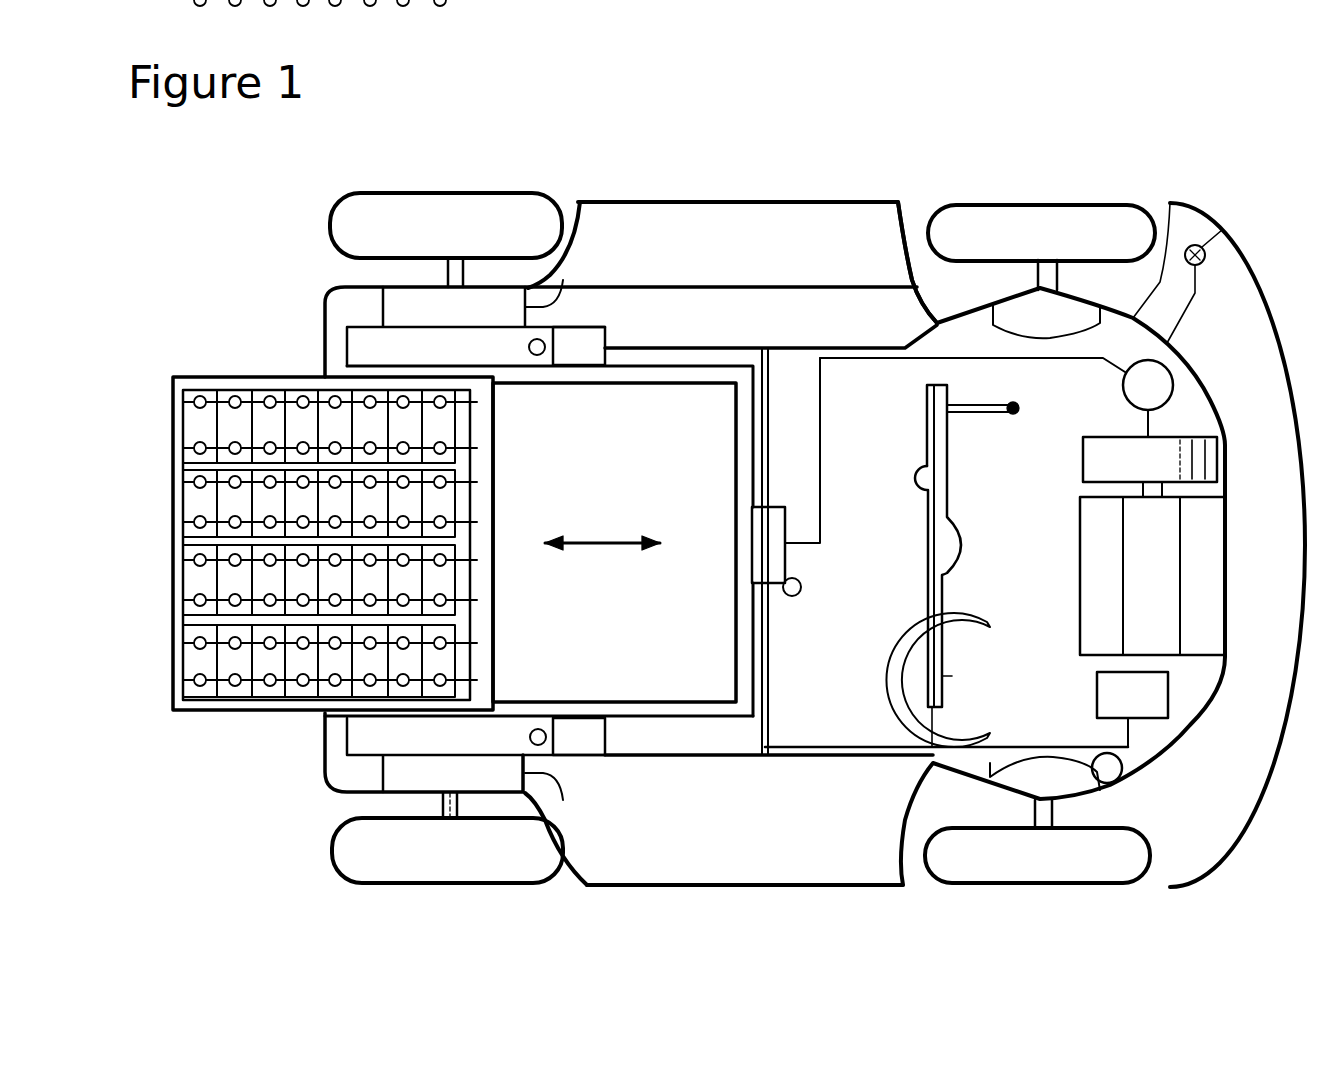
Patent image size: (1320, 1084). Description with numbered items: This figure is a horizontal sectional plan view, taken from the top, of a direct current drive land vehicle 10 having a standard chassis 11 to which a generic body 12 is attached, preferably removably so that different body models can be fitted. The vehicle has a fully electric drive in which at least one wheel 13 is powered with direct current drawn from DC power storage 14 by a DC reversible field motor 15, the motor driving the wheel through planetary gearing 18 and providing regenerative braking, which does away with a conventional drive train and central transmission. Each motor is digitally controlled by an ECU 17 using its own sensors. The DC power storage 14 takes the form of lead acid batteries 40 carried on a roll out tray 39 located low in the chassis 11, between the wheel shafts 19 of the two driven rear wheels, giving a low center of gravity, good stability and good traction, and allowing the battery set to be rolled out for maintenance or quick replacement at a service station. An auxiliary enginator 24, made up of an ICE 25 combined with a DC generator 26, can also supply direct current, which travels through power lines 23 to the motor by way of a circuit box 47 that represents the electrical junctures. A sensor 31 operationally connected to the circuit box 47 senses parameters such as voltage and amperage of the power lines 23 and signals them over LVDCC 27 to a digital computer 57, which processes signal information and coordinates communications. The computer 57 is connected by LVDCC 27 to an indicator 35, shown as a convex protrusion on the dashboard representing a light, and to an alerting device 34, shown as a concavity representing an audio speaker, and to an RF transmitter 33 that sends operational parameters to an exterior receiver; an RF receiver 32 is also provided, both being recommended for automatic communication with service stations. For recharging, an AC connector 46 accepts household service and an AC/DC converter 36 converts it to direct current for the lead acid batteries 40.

The DC drive land vehicle 10 is at (1225, 142).
The chassis 11 is at (922, 303).
The body 12 is at (757, 192).
The wheel 13 is at (375, 185).
The DC power storage 14 is at (213, 348).
The DC reversible field motor 15 is at (340, 348).
The ECU 17 is at (612, 333).
The planetary gearing 18 is at (563, 282).
The wheel shaft 19 is at (437, 270).
The power lines 23 is at (772, 380).
The auxiliary enginator 24 is at (1045, 530).
The ICE 25 is at (1082, 590).
The DC generator 26 is at (1085, 468).
The LVDCC 27 is at (858, 745).
The sensor 31 is at (545, 330).
The RF receiver 32 is at (973, 673).
The RF transmitter 33 is at (970, 412).
The alerting device 34 is at (930, 545).
The indicator 35 is at (925, 420).
The AC/DC converter 36 is at (1123, 392).
The roll out tray 39 is at (218, 710).
The lead acid batteries 40 is at (190, 505).
The AC connector 46 is at (1205, 245).
The circuit box 47 is at (787, 568).
The digital computer 57 is at (1095, 690).